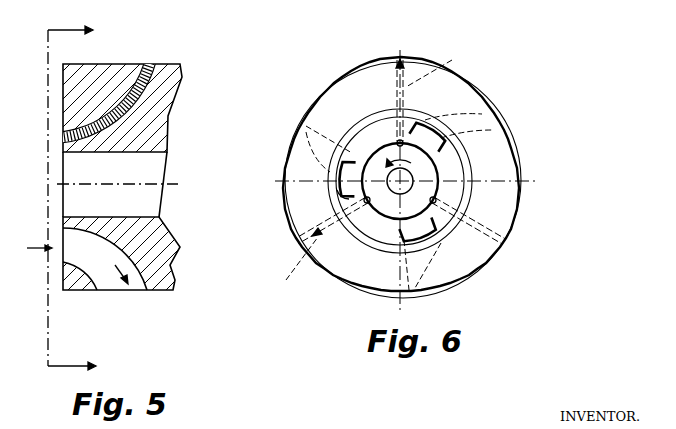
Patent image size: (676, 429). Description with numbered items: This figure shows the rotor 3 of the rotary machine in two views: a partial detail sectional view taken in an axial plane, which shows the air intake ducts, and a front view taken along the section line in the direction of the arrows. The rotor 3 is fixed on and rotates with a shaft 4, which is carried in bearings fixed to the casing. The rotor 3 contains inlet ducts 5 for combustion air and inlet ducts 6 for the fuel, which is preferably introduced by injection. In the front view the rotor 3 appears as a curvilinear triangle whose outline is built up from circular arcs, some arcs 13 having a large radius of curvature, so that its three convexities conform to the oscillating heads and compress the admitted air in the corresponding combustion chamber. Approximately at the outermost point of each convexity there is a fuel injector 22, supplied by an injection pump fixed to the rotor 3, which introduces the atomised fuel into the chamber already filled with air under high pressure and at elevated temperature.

In FIG. 5, the rotor 3 is at (77, 85).
In FIG. 6, the rotor 3 is at (500, 204).
In FIG. 5, the shaft 4 is at (142, 200).
In FIG. 6, the shaft 4 is at (397, 188).
In FIG. 5, the inlet ducts for combustion air 5 is at (109, 279).
In FIG. 6, the inlet ducts for combustion air 5 is at (447, 140).
In FIG. 5, the inlet ducts for the fuel 6 is at (136, 103).
In FIG. 6, the inlet ducts for the fuel 6 is at (380, 169).
In FIG. 6, the circular arcs with a large radius of curvature 13 is at (505, 152).
In FIG. 6, the fuel injector 22 is at (400, 59).